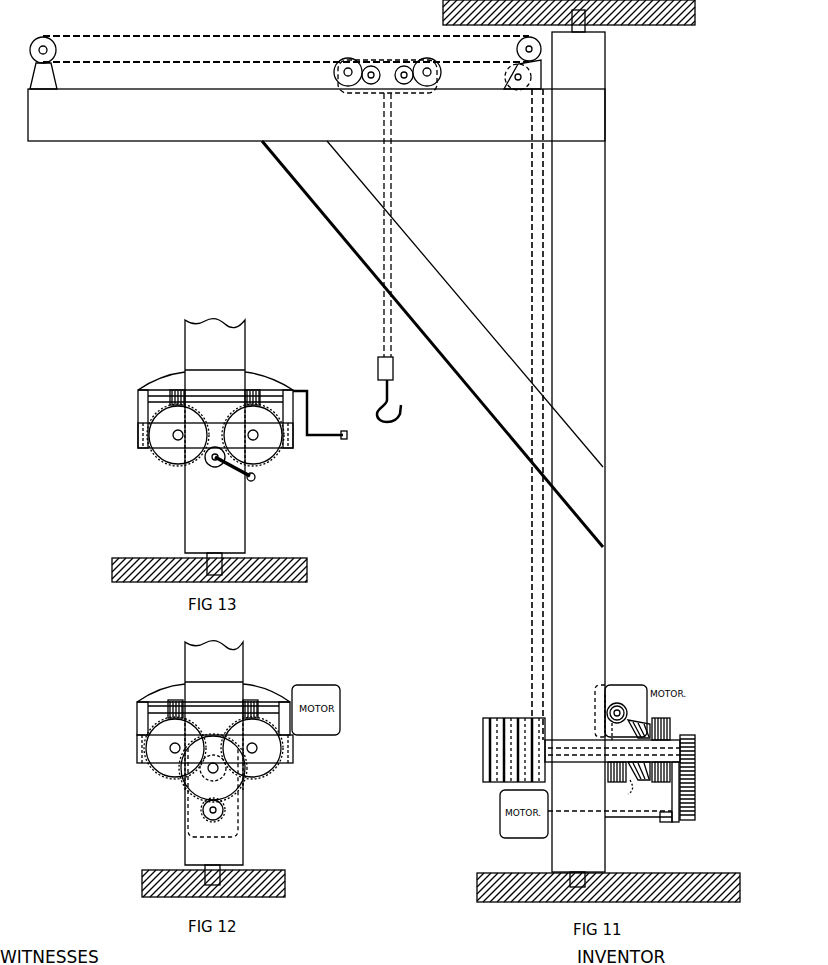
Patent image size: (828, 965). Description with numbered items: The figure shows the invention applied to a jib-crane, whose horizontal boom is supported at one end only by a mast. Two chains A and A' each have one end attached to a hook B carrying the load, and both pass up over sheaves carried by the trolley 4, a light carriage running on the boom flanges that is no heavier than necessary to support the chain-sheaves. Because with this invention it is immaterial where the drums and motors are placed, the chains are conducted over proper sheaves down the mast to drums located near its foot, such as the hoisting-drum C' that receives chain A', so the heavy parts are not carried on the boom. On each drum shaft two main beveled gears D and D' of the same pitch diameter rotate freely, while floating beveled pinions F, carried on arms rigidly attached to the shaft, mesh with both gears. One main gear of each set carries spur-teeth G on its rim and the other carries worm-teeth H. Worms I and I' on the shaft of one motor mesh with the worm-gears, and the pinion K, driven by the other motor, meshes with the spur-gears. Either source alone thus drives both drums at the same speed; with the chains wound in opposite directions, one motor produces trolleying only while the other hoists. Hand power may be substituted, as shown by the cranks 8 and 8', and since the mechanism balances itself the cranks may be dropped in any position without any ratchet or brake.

In FIG. 11, the chain A is at (293, 393).
In FIG. 11, the chain A' is at (286, 188).
In FIG. 11, the trolley 4 is at (390, 63).
In FIG. 11, the hook B is at (395, 391).
In FIG. 11, the hoisting-drum C' is at (505, 750).
In FIG. 11, the beveled gear D is at (663, 722).
In FIG. 11, the beveled gear D' is at (624, 790).
In FIG. 11, the floating beveled pinion F is at (639, 751).
In FIG. 11, the spur-teeth G is at (661, 778).
In FIG. 11, the worm-teeth H is at (614, 777).
In FIG. 12, the worm I is at (182, 702).
In FIG. 13, the worm I is at (182, 391).
In FIG. 12, the worm I' is at (258, 702).
In FIG. 13, the worm I' is at (246, 391).
In FIG. 13, the crank 8 is at (235, 468).
In FIG. 13, the crank 8' is at (326, 417).
In FIG. 12, the pinion K is at (220, 776).